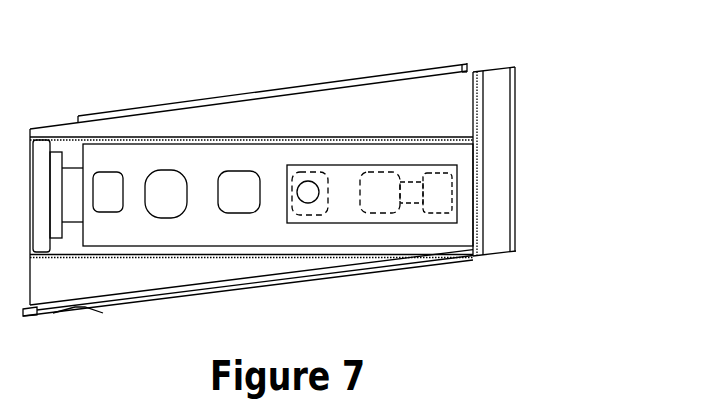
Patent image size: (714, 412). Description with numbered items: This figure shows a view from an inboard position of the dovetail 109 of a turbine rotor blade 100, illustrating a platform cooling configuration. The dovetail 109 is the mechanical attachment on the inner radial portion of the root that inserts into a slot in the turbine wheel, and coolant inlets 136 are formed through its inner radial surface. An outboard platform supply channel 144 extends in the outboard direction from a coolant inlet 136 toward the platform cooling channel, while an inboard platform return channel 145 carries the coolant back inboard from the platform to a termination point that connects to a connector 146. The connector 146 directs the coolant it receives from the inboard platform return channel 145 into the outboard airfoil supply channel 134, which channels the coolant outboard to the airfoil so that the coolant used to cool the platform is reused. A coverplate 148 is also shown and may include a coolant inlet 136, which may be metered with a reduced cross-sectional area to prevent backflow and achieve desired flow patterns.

The turbine rotor blade 100 is at (536, 48).
The dovetail 109 is at (165, 232).
The outboard airfoil supply channel 134 is at (228, 173).
The coolant inlet 136 is at (104, 195).
The outboard platform supply channel 144 is at (107, 173).
The inboard platform return channel 145 is at (457, 165).
The connector 146 is at (415, 198).
The coverplate 148 is at (458, 192).